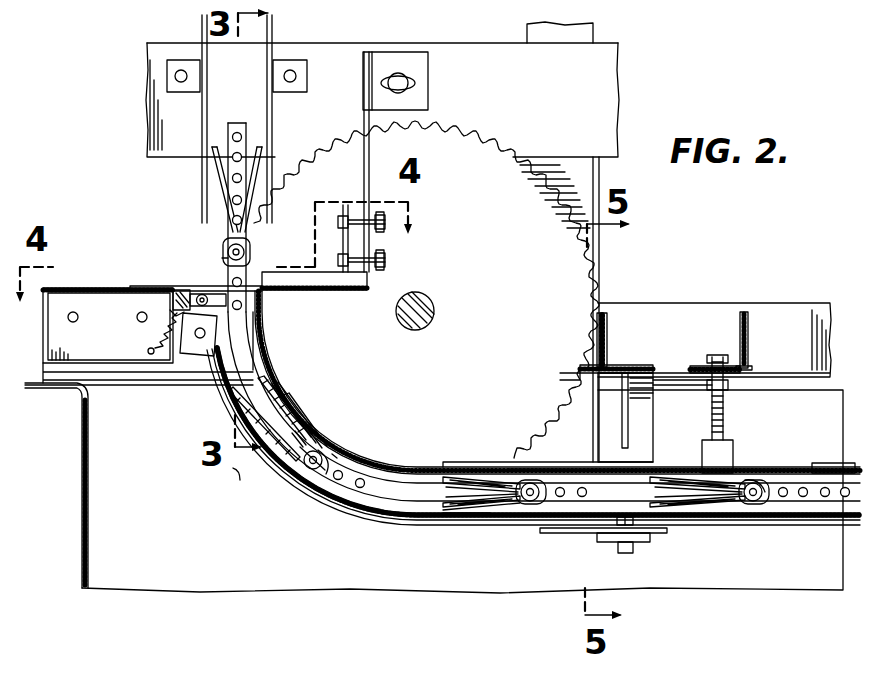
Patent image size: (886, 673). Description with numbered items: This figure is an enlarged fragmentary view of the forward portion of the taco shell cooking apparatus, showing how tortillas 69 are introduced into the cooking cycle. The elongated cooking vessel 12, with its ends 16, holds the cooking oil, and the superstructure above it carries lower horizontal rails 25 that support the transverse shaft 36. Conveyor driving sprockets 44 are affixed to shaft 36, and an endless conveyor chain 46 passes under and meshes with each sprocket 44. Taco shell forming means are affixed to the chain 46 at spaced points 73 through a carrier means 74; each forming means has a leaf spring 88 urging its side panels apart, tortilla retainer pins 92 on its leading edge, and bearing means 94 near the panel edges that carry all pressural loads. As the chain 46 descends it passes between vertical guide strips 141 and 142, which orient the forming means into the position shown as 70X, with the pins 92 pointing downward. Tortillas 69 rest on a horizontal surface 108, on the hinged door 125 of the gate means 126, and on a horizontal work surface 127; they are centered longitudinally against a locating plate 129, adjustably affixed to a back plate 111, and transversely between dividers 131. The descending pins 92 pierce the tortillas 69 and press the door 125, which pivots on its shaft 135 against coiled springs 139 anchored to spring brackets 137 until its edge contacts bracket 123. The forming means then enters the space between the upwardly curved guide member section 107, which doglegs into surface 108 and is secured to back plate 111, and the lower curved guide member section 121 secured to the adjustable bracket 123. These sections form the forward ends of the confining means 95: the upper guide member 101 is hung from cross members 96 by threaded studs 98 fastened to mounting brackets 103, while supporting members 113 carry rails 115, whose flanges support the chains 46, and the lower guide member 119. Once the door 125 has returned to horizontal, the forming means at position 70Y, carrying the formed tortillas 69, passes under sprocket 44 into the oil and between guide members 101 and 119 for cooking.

The cooking vessel 12 is at (82, 517).
The ends 16 is at (82, 459).
The lower horizontal rails 25 is at (727, 308).
The transverse shaft 36 is at (434, 319).
The conveyor driving sprocket 44 is at (566, 288).
The conveyor chain 46 is at (238, 130).
The tortillas 69 is at (140, 286).
The taco shell forming means in vertically oriented position 70X is at (217, 228).
The taco shell forming means starting the cooking cycle 70Y is at (281, 447).
The spaced attachment points 73 is at (245, 252).
The carrier means 74 is at (228, 249).
The leaf spring 88 is at (302, 428).
The tortilla retainer pins 92 is at (250, 259).
The bearing means 94 is at (262, 382).
The confining means 95 is at (380, 456).
The cross members 96 is at (750, 331).
The threaded studs 98 is at (724, 417).
The upper guide member 101 is at (491, 467).
The mounting brackets 103 is at (732, 450).
The upwardly curved guide member section 107 is at (282, 387).
The horizontally disposed surface 108 is at (318, 293).
The back plate 111 is at (385, 240).
The supporting members 113 is at (638, 373).
The rails 115 is at (583, 533).
The lower guide member 119 is at (490, 514).
The lower curved guide member section 121 is at (328, 489).
The bracket 123 is at (206, 354).
The hinged door 125 is at (203, 294).
The gate means 126 is at (172, 309).
The horizontal work surface 127 is at (90, 288).
The locating plate 129 is at (352, 240).
The dividers 131 is at (332, 279).
The shaft 135 is at (244, 312).
The spring brackets 137 is at (181, 290).
The coiled springs 139 is at (178, 348).
The guide strip 141 is at (202, 30).
The guide strip 142 is at (272, 28).